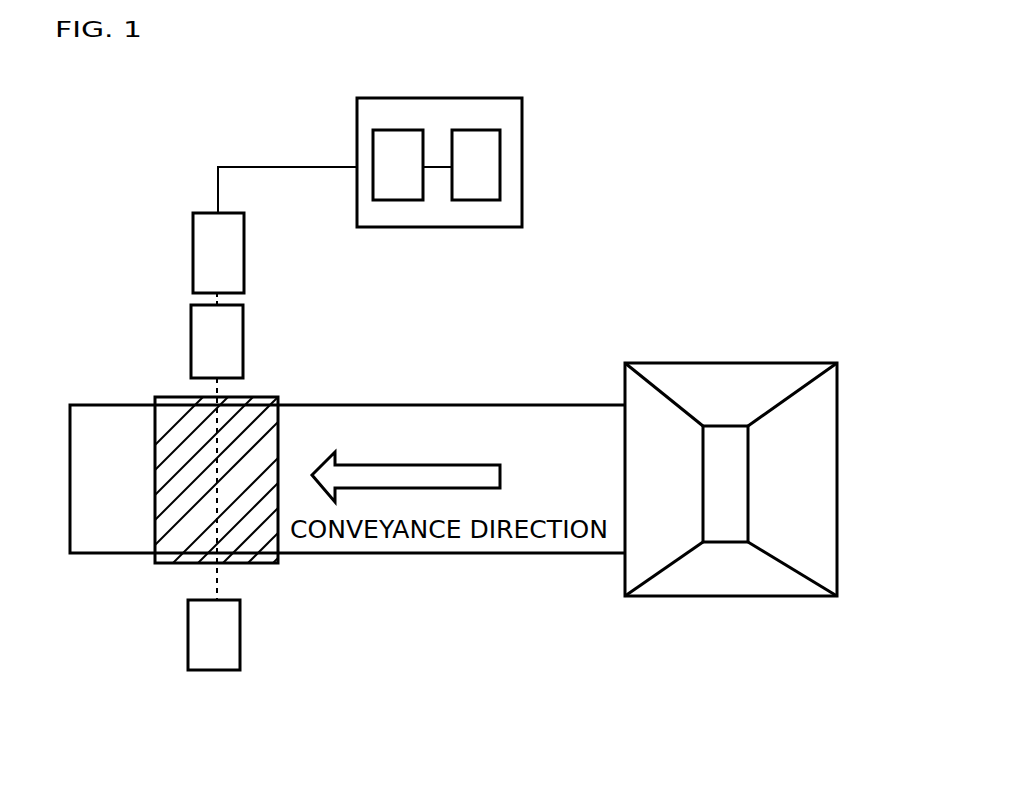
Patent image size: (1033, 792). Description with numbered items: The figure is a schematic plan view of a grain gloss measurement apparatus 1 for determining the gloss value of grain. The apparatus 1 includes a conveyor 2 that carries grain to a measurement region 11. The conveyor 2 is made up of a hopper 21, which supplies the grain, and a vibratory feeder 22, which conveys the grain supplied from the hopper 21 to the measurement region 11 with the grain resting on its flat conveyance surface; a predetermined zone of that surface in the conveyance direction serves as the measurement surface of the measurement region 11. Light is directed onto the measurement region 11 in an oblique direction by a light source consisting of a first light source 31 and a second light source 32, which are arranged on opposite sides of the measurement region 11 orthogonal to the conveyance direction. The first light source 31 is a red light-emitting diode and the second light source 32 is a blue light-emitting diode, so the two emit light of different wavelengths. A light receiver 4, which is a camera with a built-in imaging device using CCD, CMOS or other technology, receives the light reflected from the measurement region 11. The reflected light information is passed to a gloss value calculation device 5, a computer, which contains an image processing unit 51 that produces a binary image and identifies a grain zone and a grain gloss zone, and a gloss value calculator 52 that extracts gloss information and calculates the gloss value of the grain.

The grain gloss measurement apparatus 1 is at (760, 129).
The conveyor 2 is at (453, 545).
The light receiver 4 is at (209, 250).
The gloss value calculation device 5 is at (507, 120).
The measurement region 11 is at (200, 422).
The hopper 21 is at (731, 516).
The vibratory feeder 22 is at (568, 555).
The first light source 31 is at (223, 635).
The second light source 32 is at (224, 342).
The image processing unit 51 is at (403, 180).
The gloss value calculator 52 is at (481, 185).